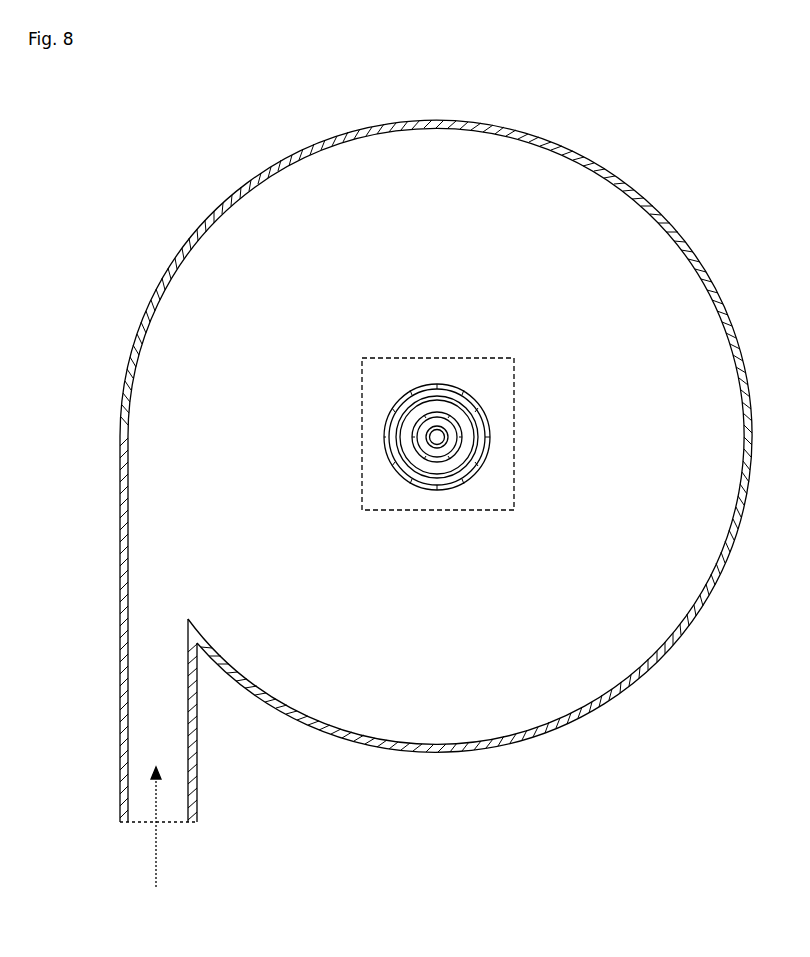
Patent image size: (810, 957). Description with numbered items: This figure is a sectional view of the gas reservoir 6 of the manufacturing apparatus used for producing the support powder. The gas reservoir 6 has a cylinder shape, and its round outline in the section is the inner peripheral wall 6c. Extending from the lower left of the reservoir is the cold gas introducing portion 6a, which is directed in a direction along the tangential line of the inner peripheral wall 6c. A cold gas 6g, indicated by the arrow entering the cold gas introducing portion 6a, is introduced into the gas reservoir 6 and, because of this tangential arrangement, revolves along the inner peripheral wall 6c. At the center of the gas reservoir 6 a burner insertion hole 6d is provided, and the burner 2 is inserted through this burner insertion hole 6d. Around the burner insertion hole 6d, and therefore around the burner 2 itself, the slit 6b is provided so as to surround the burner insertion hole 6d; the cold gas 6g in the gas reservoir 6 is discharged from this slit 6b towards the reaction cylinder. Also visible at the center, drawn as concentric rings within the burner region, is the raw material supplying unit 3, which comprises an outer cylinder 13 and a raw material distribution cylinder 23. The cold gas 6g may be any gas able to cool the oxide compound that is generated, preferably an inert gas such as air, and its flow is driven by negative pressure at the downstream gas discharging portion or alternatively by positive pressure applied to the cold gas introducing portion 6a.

The gas reservoir 6 is at (436, 506).
The inner peripheral wall 6c is at (168, 286).
The cold gas introducing portion 6a is at (197, 786).
The cold gas 6g is at (156, 841).
The burner insertion hole 6d is at (442, 402).
The slit 6b is at (477, 462).
The burner 2 is at (463, 418).
The outer cylinder 13 is at (427, 447).
The raw material distribution cylinder 23 is at (435, 445).
The raw material supplying unit 3 is at (463, 462).